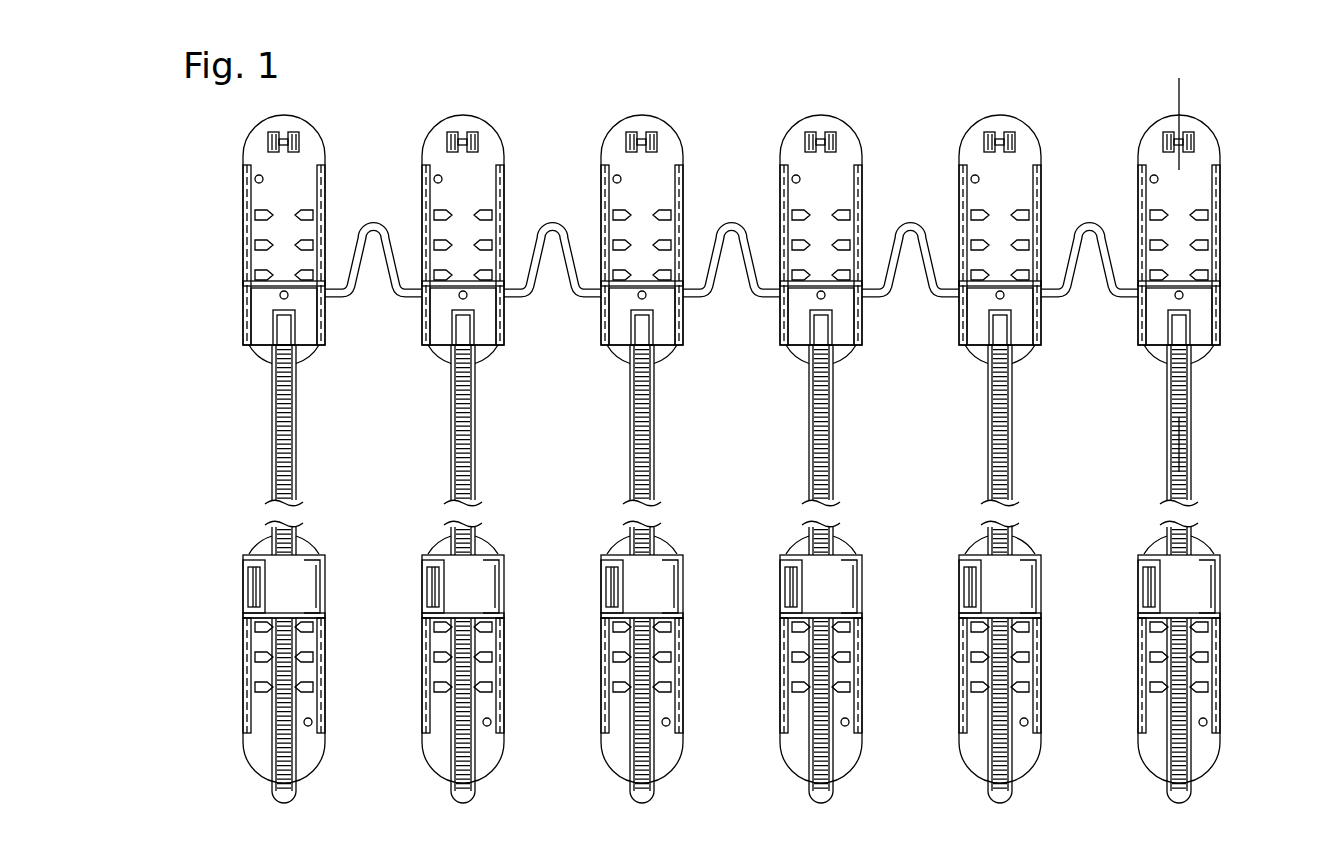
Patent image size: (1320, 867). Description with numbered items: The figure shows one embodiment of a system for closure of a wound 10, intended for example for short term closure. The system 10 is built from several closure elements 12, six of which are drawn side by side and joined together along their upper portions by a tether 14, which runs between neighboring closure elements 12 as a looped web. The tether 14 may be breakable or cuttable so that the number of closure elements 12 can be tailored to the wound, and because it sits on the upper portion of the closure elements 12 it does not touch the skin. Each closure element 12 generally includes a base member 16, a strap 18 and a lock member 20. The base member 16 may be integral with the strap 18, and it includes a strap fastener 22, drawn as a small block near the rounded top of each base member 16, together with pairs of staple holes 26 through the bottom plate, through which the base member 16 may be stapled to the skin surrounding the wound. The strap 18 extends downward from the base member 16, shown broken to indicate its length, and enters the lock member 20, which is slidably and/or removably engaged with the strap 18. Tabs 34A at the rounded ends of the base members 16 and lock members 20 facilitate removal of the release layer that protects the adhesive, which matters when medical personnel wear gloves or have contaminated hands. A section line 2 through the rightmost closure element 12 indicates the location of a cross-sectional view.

The system for closure of a wound 10 is at (762, 431).
The closure element 12 is at (672, 113).
The tether 14 is at (732, 223).
The base member 16 is at (848, 142).
The strap 18 is at (648, 390).
The lock member 20 is at (845, 740).
The strap fastener 22 is at (630, 132).
The staple holes 26 is at (664, 210).
The tab 34A is at (432, 365).
The section line for FIG. 2 is at (1220, 88).